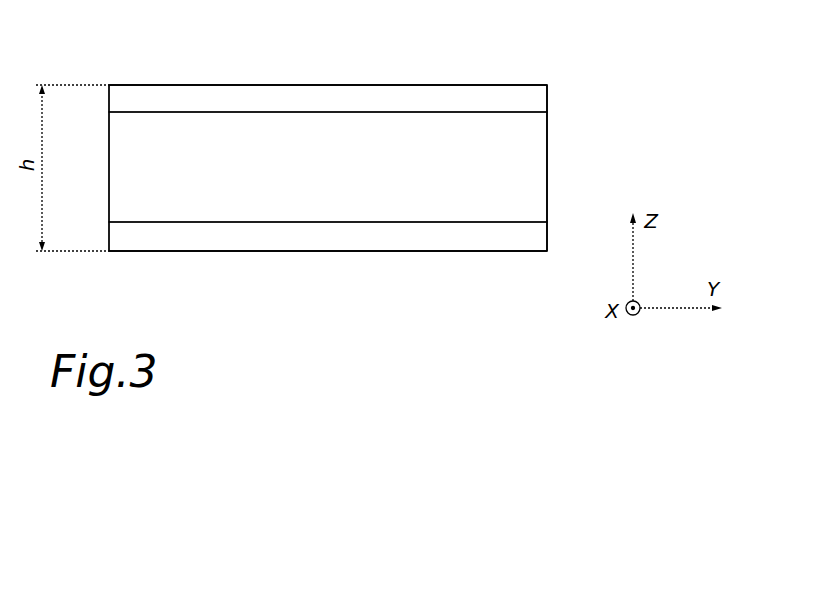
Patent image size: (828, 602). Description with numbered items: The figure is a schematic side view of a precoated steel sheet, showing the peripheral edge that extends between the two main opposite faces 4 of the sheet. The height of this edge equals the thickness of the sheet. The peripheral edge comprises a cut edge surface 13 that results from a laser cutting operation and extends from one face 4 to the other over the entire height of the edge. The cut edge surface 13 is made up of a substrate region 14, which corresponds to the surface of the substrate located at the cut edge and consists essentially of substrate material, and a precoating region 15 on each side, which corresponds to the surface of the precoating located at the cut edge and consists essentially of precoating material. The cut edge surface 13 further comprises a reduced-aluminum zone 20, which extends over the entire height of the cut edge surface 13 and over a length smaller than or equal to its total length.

The precoating region 15 is at (328, 168).
The substrate region 14 is at (328, 167).
The main opposite faces 4 is at (415, 85).
The cut edge surface 13 is at (558, 95).
The reduced-aluminum zone 20 is at (563, 168).